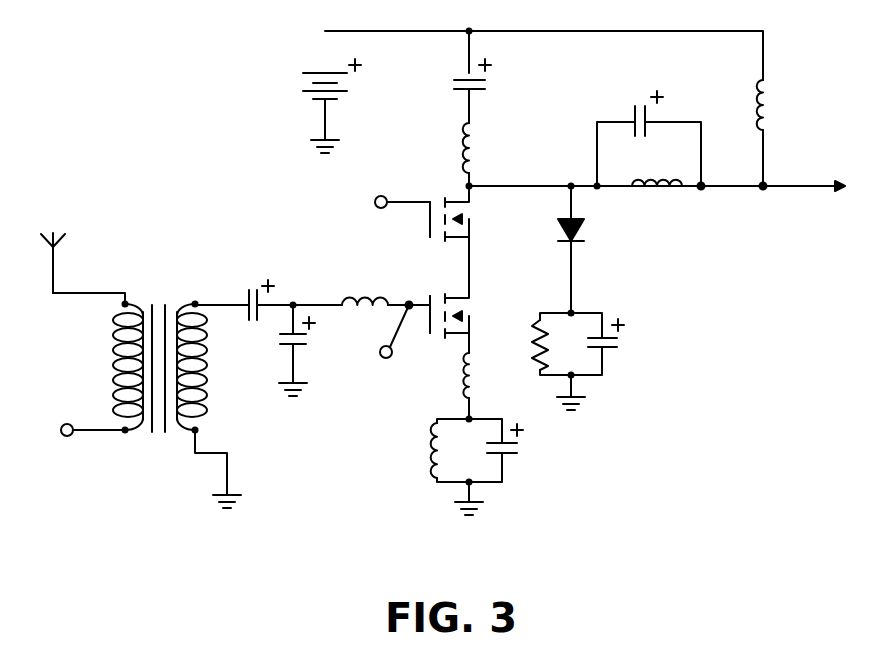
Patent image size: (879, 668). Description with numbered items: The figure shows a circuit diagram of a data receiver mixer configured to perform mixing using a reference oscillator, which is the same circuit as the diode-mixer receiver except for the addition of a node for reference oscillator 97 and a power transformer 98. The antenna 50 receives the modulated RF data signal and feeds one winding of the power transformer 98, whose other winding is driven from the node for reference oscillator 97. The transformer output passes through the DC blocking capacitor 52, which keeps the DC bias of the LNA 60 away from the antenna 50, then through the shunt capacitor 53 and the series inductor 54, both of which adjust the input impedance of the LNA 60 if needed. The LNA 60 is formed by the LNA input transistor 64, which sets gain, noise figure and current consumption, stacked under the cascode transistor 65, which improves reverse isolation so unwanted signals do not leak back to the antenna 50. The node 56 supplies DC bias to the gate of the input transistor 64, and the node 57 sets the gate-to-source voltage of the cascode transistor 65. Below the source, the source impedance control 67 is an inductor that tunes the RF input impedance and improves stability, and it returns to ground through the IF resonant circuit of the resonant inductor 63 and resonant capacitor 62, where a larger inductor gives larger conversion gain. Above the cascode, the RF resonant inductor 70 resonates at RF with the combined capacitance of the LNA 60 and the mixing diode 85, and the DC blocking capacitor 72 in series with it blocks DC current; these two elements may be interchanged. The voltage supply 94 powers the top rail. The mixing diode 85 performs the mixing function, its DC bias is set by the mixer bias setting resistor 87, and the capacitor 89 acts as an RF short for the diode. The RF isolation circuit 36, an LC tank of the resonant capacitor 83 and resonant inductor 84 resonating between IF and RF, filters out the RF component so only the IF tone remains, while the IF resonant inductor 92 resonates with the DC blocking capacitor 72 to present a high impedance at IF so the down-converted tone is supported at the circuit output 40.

The antenna 50 is at (54, 218).
The power transformer 98 is at (158, 289).
The node for reference oscillator 97 is at (63, 449).
The DC blocking capacitor 52 is at (252, 287).
The shunt capacitor 53 is at (282, 348).
The series inductor 54 is at (365, 282).
The LNA input transistor 64 is at (411, 284).
The node for DC bias of LNA 56 is at (369, 362).
The node for DC bias of LNA 57 is at (359, 201).
The cascode transistor 65 is at (473, 219).
The LNA (low noise amplifier) 60 is at (473, 316).
The source impedance control 67 is at (490, 375).
The resonant inductor 63 is at (412, 450).
The resonant capacitor 62 is at (525, 444).
The RF resonant inductor 70 is at (439, 148).
The DC blocking capacitor 72 is at (450, 71).
The voltage supply 94 is at (312, 76).
The resonant capacitor 83 is at (629, 107).
The resonant inductor 84 is at (642, 167).
The mixing diode 85 is at (592, 220).
The mixer bias setting resistor 87 is at (558, 345).
The capacitor 89 is at (626, 338).
The IF resonant inductor 92 is at (781, 104).
The RF isolation circuit 36 is at (691, 203).
The circuit output 40 is at (788, 203).